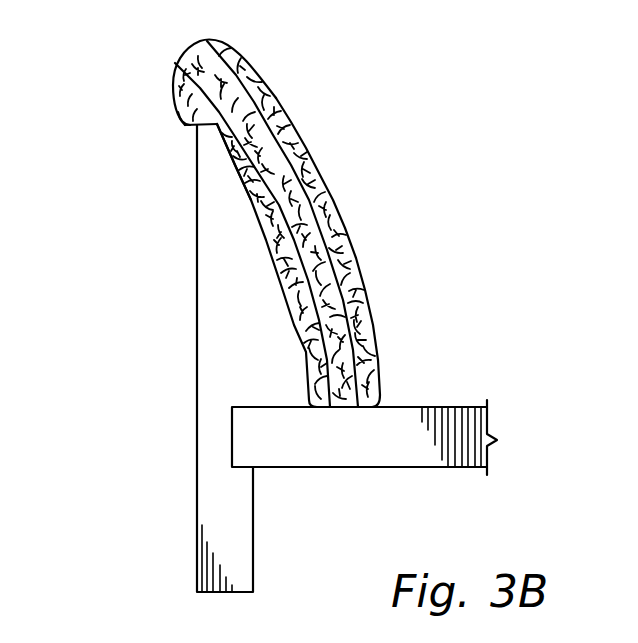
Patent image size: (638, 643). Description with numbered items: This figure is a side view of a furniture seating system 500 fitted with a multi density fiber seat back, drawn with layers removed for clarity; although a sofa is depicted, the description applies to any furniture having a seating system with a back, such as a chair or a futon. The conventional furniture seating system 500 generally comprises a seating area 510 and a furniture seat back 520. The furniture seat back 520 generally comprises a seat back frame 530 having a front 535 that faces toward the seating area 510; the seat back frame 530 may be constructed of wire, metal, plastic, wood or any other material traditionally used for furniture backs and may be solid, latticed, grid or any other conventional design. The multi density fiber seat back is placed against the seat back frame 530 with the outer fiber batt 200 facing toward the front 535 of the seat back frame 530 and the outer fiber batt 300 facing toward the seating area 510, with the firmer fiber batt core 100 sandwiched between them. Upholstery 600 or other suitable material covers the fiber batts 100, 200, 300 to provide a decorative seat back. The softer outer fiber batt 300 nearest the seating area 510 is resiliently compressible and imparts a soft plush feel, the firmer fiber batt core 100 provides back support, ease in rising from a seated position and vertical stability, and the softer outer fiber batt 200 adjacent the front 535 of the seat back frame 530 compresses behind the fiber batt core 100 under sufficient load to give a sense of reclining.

The furniture seating system 500 is at (127, 47).
The upholstery 600 is at (224, 44).
The outer fiber batt 300 is at (292, 117).
The fiber batt core 100 is at (290, 204).
The outer fiber batt 200 is at (303, 303).
The furniture seat back 520 is at (190, 122).
The front 535 is at (250, 203).
The seat back frame 530 is at (215, 281).
The seating area 510 is at (443, 407).